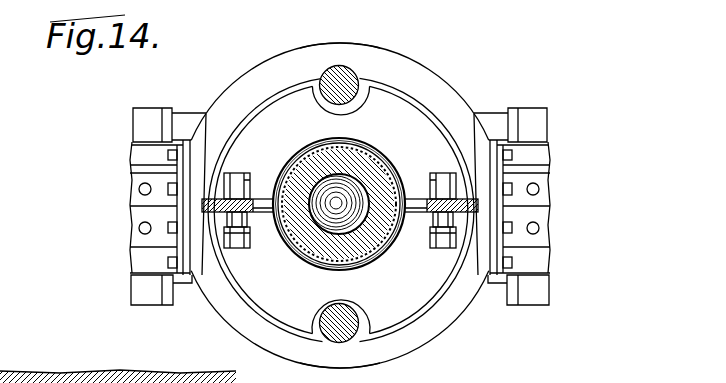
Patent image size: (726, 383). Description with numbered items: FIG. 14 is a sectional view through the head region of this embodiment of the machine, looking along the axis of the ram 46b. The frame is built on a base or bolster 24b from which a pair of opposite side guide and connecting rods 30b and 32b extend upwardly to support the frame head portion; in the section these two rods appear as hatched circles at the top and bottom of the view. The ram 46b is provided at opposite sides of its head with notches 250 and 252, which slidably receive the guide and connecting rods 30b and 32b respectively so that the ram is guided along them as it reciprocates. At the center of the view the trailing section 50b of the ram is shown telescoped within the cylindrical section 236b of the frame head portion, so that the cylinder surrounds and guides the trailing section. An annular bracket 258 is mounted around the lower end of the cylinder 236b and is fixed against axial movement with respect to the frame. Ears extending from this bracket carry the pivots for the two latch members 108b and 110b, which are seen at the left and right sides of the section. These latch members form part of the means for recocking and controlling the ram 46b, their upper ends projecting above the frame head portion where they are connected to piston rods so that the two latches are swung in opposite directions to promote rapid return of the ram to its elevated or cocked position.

The base or bolster 24b is at (436, 334).
The guide and connecting rod 30b is at (359, 66).
The guide and connecting rod 32b is at (347, 338).
The ram 46b is at (440, 300).
The trailing section 50b is at (383, 156).
The latch member 108b is at (208, 105).
The latch member 110b is at (479, 206).
The cylindrical section 236b is at (358, 142).
The notch 250 is at (322, 68).
The notch 252 is at (321, 333).
The annular bracket 258 is at (301, 154).